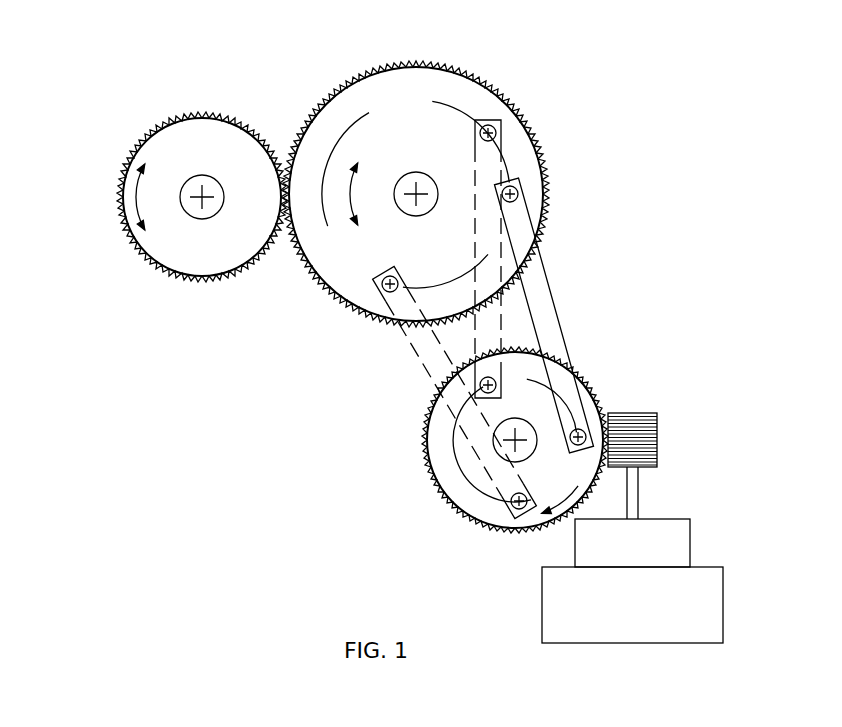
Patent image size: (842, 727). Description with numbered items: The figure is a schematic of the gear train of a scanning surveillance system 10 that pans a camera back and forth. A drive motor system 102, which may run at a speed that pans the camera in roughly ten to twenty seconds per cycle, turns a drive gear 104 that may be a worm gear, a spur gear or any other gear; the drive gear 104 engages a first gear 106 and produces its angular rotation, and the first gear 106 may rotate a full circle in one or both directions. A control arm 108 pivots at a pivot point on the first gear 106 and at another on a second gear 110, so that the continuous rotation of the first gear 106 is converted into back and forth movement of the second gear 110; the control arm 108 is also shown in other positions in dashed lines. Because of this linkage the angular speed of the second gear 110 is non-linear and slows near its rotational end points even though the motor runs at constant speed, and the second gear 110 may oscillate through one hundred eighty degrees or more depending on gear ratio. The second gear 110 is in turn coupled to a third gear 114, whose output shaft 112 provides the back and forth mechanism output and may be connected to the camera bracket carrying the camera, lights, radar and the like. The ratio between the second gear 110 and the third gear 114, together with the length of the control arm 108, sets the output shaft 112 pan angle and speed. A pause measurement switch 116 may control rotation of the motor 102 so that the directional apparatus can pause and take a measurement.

The surveillance system 10 is at (660, 100).
The drive motor system 102 is at (663, 517).
The drive gear 104 is at (642, 430).
The first gear 106 is at (457, 478).
The control arm 108 is at (547, 318).
The second gear 110 is at (342, 273).
The output shaft 112 is at (193, 210).
The third gear 114 is at (170, 148).
The pause measurement switch 116 is at (725, 597).